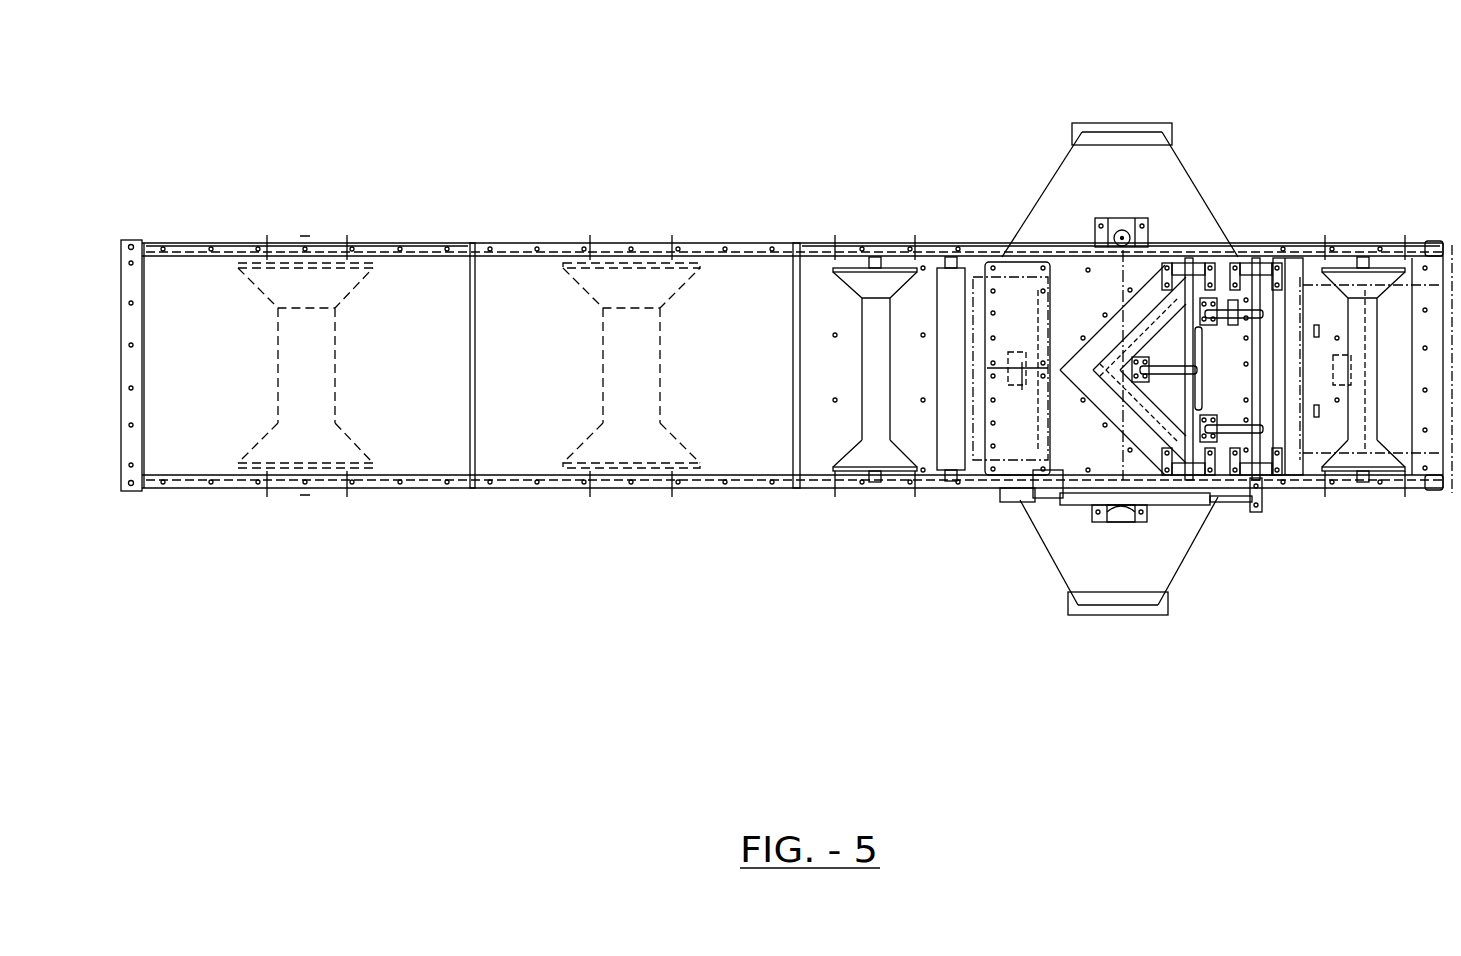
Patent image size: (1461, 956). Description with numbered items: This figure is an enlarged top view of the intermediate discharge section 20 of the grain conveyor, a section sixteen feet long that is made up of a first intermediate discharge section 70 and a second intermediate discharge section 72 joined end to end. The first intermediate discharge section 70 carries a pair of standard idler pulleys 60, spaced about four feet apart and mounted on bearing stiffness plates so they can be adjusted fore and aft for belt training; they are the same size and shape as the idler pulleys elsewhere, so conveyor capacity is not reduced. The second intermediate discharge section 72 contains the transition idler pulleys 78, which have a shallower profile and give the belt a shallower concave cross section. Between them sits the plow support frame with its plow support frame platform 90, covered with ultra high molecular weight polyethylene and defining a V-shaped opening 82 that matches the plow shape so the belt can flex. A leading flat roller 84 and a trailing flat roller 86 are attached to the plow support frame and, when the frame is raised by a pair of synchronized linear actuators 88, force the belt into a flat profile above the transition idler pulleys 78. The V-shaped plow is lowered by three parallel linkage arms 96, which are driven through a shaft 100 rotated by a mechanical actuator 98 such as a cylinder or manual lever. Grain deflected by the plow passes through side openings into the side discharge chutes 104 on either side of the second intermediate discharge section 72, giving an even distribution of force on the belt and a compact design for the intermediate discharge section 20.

The intermediate discharge section 20 is at (946, 84).
The idler pulleys 60 is at (318, 440).
The first intermediate discharge section 70 is at (408, 250).
The second intermediate discharge section 72 is at (878, 252).
The transition idler pulleys 78 is at (862, 458).
The V-shaped opening 82 is at (1140, 482).
The leading flat roller 84 is at (948, 456).
The trailing flat roller 86 is at (1290, 465).
The synchronized linear actuators 88 is at (1135, 240).
The plow support frame platform 90 is at (1050, 472).
The parallel linkage arms 96 is at (1232, 315).
The mechanical actuator 98 is at (1005, 496).
The shaft 100 is at (1258, 478).
The side discharge chutes 104 is at (1160, 163).